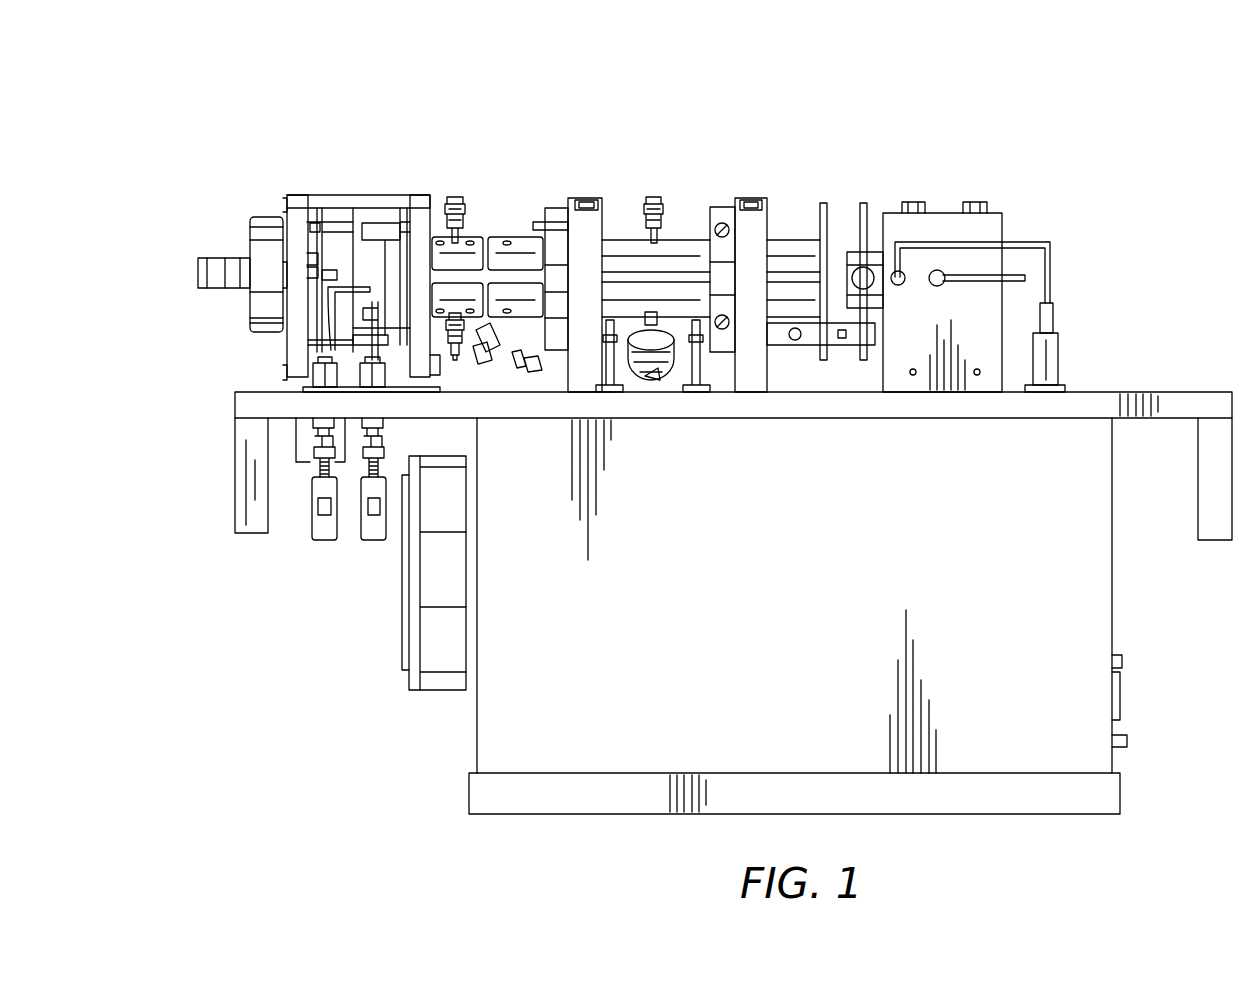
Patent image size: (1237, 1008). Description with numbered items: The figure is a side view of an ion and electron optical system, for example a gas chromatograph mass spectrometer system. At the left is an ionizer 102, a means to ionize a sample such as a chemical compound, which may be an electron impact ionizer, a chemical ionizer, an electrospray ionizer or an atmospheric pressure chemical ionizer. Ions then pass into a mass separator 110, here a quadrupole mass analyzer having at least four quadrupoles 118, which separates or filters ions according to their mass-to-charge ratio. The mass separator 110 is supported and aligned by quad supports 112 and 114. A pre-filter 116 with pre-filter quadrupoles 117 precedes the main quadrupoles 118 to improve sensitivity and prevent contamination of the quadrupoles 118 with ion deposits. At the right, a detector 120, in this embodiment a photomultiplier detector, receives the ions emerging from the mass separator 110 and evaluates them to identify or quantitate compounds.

The ionizer 102 is at (292, 175).
The mass separator 110 is at (682, 222).
The support 112 is at (556, 200).
The support 114 is at (718, 208).
The pre-filter 116 is at (480, 200).
The pre-filter quadrupoles 117 is at (320, 479).
The quadrupoles 118 is at (373, 479).
The detector 120 is at (940, 198).